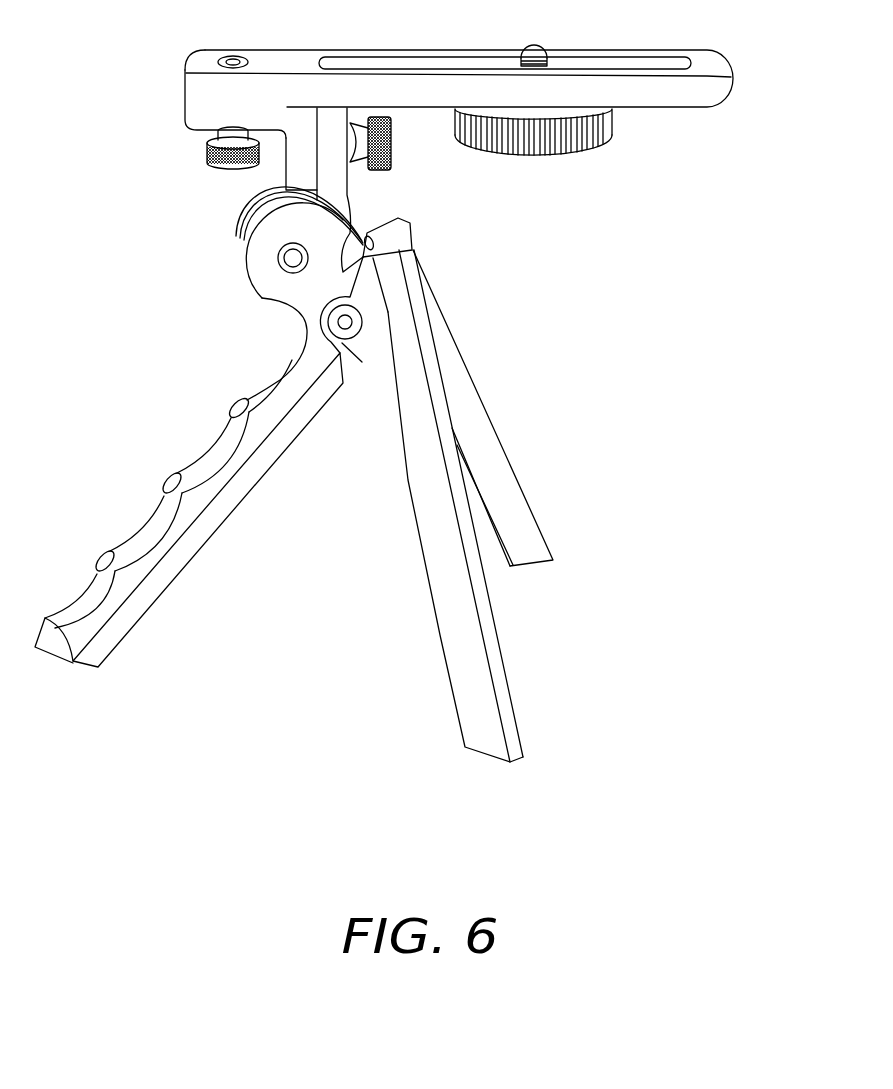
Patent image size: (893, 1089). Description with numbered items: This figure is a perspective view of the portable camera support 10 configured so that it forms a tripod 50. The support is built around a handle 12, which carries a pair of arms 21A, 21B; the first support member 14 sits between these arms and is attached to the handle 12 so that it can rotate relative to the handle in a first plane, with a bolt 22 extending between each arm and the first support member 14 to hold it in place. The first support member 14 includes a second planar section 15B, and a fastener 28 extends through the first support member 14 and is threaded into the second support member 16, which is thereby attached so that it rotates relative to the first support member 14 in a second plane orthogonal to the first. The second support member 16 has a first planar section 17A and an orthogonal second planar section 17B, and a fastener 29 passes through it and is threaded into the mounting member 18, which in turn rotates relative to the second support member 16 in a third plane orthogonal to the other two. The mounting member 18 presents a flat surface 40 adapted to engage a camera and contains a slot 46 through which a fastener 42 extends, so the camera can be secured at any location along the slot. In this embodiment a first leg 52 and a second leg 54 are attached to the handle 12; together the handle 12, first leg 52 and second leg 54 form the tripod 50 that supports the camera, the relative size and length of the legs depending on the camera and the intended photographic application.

The portable camera support 10 is at (165, 231).
The handle 12 is at (112, 575).
The first support member 14 is at (388, 219).
The second planar section 15B is at (348, 186).
The second support member 16 is at (268, 115).
The first planar section 17A is at (284, 181).
The second planar section 17B is at (197, 113).
The mounting member 18 is at (722, 85).
The arm 21A is at (250, 209).
The arm 21B is at (250, 266).
The bolt 22 is at (290, 264).
The fastener 28 is at (392, 133).
The fastener 29 is at (208, 152).
The surface 40 is at (327, 55).
The fastener 42 is at (577, 150).
The slot 46 is at (590, 58).
The tripod 50 is at (320, 553).
The first leg 52 is at (510, 705).
The second leg 54 is at (525, 512).